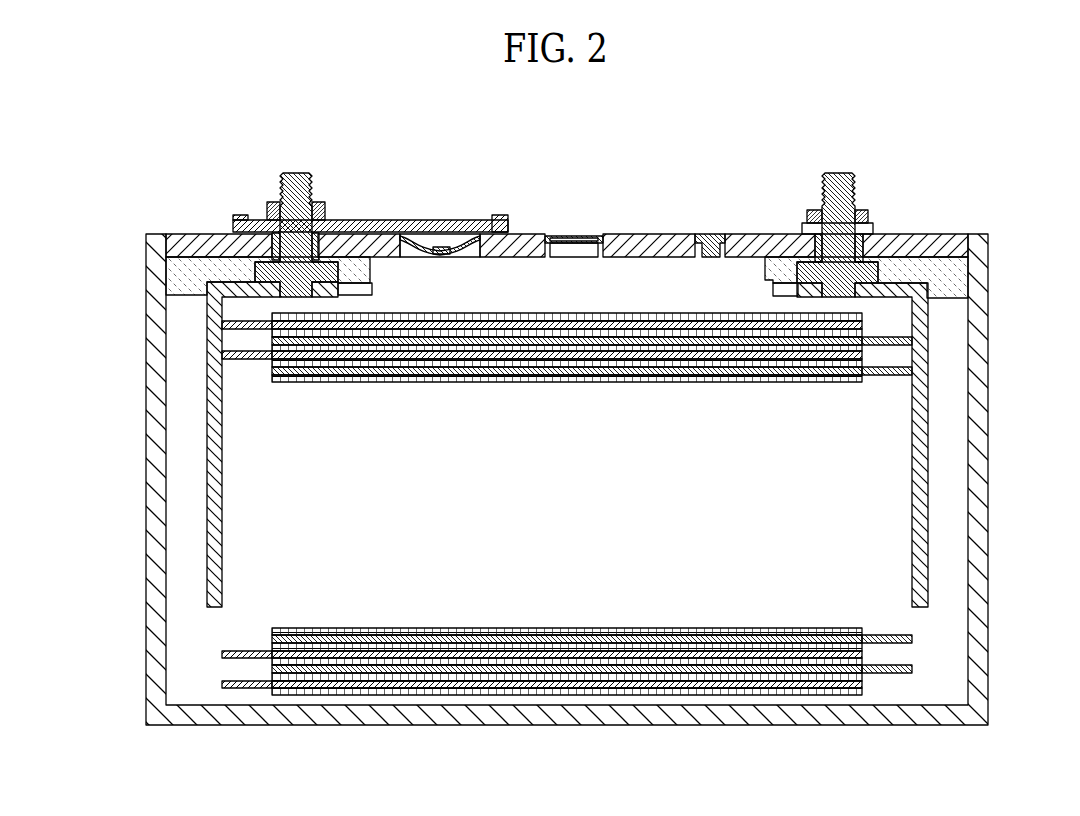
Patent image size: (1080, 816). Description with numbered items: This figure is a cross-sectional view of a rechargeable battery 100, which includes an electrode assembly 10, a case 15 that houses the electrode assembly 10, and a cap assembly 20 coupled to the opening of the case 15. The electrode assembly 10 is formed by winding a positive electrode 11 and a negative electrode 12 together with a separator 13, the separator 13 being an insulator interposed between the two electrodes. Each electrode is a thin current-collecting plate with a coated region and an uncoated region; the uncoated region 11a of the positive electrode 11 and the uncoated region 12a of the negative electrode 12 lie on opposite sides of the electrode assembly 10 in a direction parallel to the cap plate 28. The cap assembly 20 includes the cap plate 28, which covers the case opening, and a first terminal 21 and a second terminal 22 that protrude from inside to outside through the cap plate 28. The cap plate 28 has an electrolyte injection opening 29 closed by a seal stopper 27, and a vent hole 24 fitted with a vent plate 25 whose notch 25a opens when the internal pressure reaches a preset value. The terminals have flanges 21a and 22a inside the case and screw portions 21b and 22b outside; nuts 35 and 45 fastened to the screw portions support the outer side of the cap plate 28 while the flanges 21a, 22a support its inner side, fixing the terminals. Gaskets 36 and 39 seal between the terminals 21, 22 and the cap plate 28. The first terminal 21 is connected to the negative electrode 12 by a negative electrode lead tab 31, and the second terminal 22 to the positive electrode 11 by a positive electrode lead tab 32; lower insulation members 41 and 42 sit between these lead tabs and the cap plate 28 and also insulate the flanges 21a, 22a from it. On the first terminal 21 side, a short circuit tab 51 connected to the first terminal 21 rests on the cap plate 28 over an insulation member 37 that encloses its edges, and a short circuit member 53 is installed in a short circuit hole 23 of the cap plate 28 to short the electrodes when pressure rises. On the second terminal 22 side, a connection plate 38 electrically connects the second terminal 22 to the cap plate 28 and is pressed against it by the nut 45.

The rechargeable battery 100 is at (690, 131).
The electrode assembly 10 is at (667, 699).
The positive electrode 11 is at (420, 674).
The uncoated region 11a is at (897, 674).
The negative electrode 12 is at (363, 685).
The uncoated region 12a is at (237, 689).
The separator 13 is at (570, 662).
The case 15 is at (977, 432).
The cap assembly 20 is at (579, 191).
The first terminal 21 is at (291, 198).
The flange 21a is at (372, 283).
The screw portion 21b is at (280, 190).
The second terminal 22 is at (832, 198).
The flange 22a is at (773, 281).
The screw portion 22b is at (822, 192).
The short circuit hole 23 is at (463, 258).
The vent hole 24 is at (575, 258).
The vent plate 25 is at (586, 209).
The notch 25a is at (570, 237).
The seal stopper 27 is at (708, 248).
The cap plate 28 is at (952, 240).
The electrolyte injection opening 29 is at (712, 258).
The negative electrode lead tab 31 is at (207, 441).
The positive electrode lead tab 32 is at (928, 542).
The nut 35 is at (322, 202).
The gasket 36 is at (272, 250).
The insulation member 37 is at (497, 214).
The connection plate 38 is at (875, 228).
The gasket 39 is at (810, 251).
The lower insulation member 41 is at (175, 278).
The lower insulation member 42 is at (952, 277).
The nut 45 is at (869, 212).
The short circuit tab 51 is at (370, 196).
The short circuit member 53 is at (440, 246).